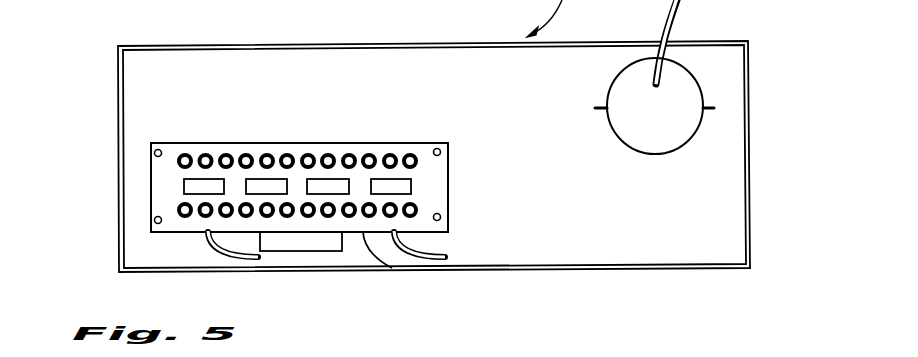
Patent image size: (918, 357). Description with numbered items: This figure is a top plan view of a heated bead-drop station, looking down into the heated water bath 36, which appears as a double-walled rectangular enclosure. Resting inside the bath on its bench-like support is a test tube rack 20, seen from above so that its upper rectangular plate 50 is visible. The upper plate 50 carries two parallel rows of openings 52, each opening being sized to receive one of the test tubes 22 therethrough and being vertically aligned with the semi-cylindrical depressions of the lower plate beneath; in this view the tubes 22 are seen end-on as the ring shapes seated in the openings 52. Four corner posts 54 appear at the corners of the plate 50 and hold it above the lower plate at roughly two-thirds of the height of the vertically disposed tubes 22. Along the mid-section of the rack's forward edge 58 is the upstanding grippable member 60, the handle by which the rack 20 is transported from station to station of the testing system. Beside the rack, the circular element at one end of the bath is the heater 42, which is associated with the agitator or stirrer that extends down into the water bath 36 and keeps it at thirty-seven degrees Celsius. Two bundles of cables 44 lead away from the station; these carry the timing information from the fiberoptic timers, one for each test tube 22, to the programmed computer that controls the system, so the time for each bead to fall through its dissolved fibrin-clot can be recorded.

The test tube rack 20 is at (338, 140).
The test tube 22 is at (221, 153).
The heated water bath 36 is at (610, 270).
The heater 42 is at (655, 165).
The cable bundles 44 is at (245, 268).
The upper rectangular plate 50 is at (260, 150).
The openings 52 is at (416, 153).
The corner posts 54 is at (154, 152).
The forward edge 58 is at (398, 270).
The grippable member 60 is at (323, 252).